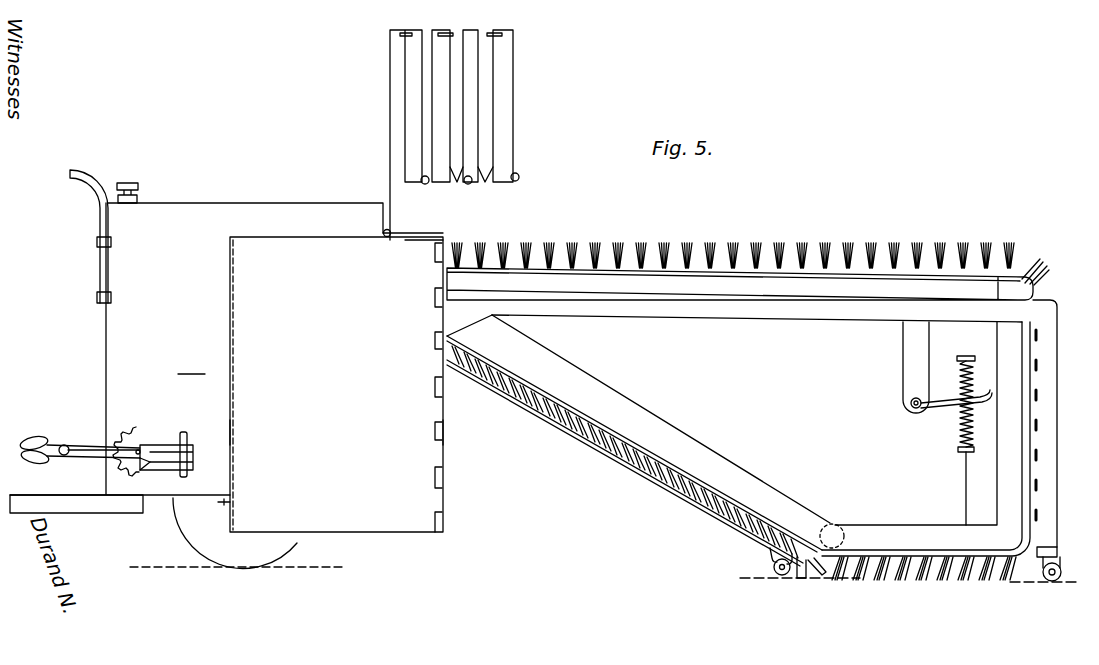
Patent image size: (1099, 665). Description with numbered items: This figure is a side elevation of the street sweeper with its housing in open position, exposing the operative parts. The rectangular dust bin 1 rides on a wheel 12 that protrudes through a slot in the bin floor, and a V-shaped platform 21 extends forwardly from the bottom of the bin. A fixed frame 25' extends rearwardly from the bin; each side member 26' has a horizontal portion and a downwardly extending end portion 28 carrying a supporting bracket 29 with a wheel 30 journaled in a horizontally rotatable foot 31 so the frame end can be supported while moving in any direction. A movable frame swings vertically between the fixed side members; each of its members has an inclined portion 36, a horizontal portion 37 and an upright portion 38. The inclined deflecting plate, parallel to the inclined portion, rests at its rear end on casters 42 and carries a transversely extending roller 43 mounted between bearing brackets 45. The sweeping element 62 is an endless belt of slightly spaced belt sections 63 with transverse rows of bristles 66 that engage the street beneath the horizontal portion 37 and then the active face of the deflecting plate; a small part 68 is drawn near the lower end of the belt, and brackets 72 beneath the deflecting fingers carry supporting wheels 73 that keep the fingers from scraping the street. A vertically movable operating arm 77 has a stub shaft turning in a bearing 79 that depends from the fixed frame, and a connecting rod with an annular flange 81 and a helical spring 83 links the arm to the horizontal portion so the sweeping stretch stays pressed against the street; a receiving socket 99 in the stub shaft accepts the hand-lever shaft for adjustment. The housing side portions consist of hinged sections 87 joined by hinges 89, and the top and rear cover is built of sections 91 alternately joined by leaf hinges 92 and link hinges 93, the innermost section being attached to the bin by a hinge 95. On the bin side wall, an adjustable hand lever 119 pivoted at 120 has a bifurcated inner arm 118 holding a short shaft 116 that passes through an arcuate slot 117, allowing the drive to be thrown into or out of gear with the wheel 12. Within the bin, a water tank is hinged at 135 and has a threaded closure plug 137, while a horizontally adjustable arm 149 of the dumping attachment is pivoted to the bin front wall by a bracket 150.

The dust bin 1 is at (191, 364).
The wheel 12 is at (236, 533).
The platform 21 is at (43, 494).
The fixed frame 25' is at (750, 256).
The side member 26' is at (757, 330).
The downwardly extending end portion 28 is at (1045, 388).
The supporting bracket 29 is at (1057, 551).
The wheel 30 is at (1061, 587).
The horizontally rotatable foot 31 is at (1044, 572).
The inclined portion 36 is at (680, 432).
The horizontal portion 37 is at (880, 528).
The upright portion 38 is at (1007, 467).
The casters 42 is at (773, 573).
The roller 43 is at (831, 522).
The bearing brackets 45 is at (772, 552).
The sweeping element 62 is at (624, 272).
The belt sections 63 is at (700, 472).
The bristles 66 is at (566, 410).
The bracket 68 is at (798, 570).
The brackets 72 is at (816, 572).
The supporting wheels 73 is at (830, 578).
The operating arm 77 is at (956, 414).
The bearing 79 is at (906, 396).
The annular flange 81 is at (951, 486).
The helical spring 83 is at (960, 441).
The hinged sections 87 is at (336, 384).
The hinges 89 is at (232, 432).
The sections 91 is at (417, 107).
The hinges 92 is at (466, 184).
The hinges 93 is at (494, 32).
The hinge 95 is at (395, 232).
The receiving socket 99 is at (910, 404).
The short shaft 116 is at (193, 455).
The arcuate slot 117 is at (188, 440).
The bifurcated inner arm 118 is at (156, 463).
The adjustable hand lever 119 is at (78, 440).
The pivot 120 is at (145, 440).
The hinge 135 is at (380, 237).
The threaded closure plug 137 is at (130, 182).
The horizontally adjustable arm 149 is at (74, 179).
The bracket 150 is at (98, 243).